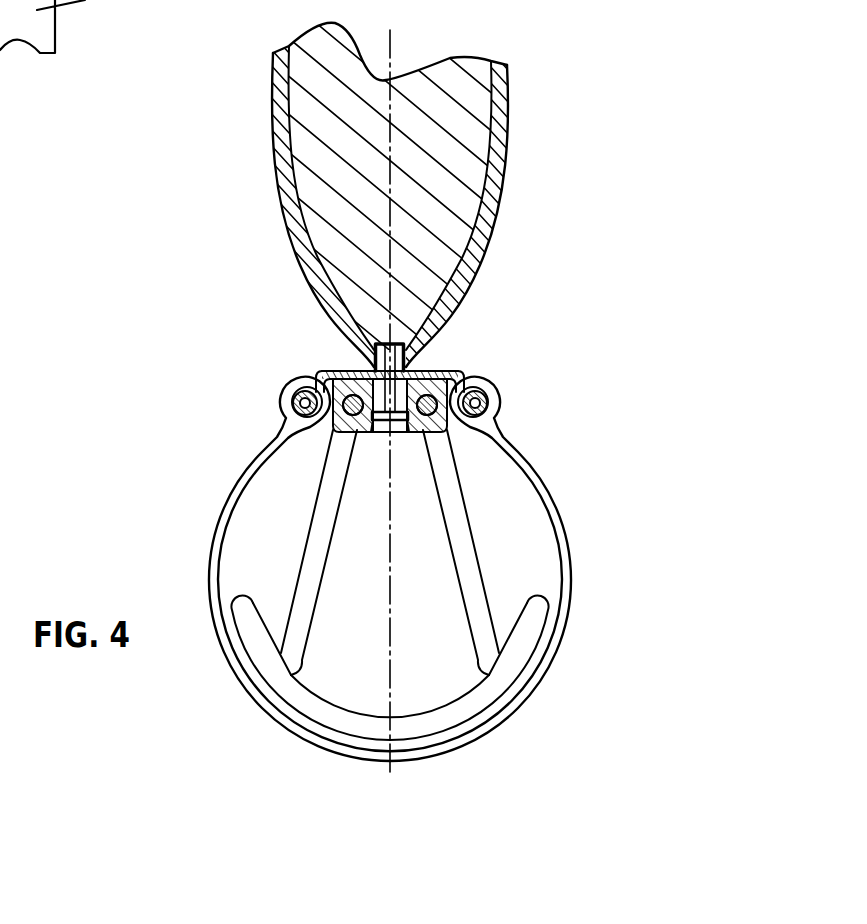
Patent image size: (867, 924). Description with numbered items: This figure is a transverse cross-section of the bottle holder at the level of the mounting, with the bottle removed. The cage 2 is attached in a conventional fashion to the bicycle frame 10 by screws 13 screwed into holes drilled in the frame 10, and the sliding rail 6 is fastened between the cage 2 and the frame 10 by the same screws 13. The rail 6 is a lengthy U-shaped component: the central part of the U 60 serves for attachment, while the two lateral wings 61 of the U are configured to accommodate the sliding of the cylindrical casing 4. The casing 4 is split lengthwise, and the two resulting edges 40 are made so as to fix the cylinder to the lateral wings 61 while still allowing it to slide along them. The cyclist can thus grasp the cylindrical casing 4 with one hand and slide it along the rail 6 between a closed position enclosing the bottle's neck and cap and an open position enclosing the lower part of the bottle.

The cage 2 is at (467, 550).
The cylindrical casing 4 is at (530, 463).
The sliding rail 6 is at (466, 379).
The bicycle frame 10 is at (500, 152).
The screws 13 is at (370, 363).
The edges of the cylindrical casing 40 is at (281, 408).
The central part of the U 60 is at (450, 372).
The lateral wings of the U 61 is at (296, 395).